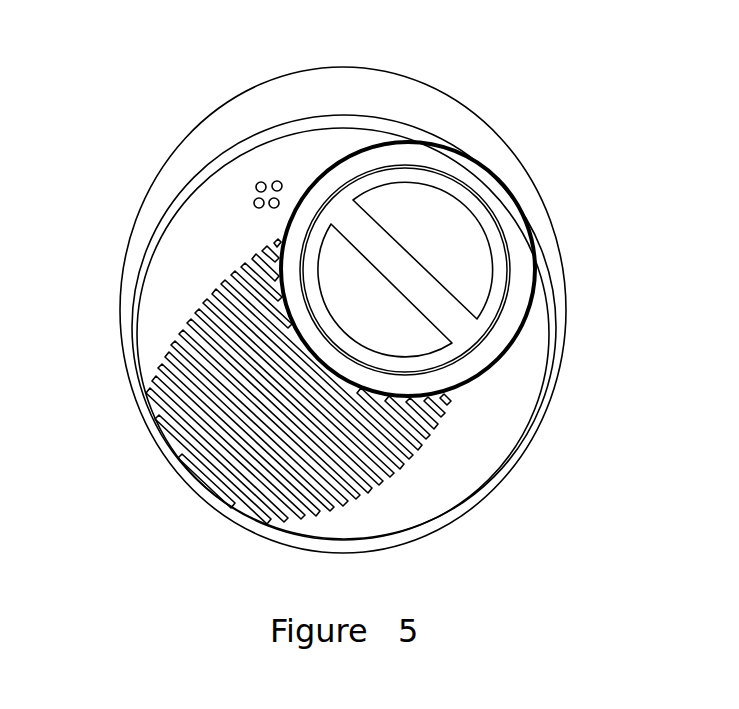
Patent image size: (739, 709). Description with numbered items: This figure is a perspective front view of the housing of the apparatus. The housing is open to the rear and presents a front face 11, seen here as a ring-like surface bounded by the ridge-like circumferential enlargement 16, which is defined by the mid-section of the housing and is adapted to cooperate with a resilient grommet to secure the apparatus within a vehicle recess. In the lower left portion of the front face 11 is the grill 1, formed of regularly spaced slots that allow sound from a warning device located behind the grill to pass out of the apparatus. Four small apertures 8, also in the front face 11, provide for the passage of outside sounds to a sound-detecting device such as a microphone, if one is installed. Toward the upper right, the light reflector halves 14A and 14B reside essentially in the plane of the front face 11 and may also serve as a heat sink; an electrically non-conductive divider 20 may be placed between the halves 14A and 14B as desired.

The grill 1 is at (197, 477).
The apertures 8 is at (248, 192).
The front face 11 is at (475, 443).
The light reflector half 14A is at (402, 325).
The light reflector half 14B is at (468, 249).
The ridge-like circumferential enlargement 16 is at (243, 92).
The electrically non-conductive divider 20 is at (452, 312).